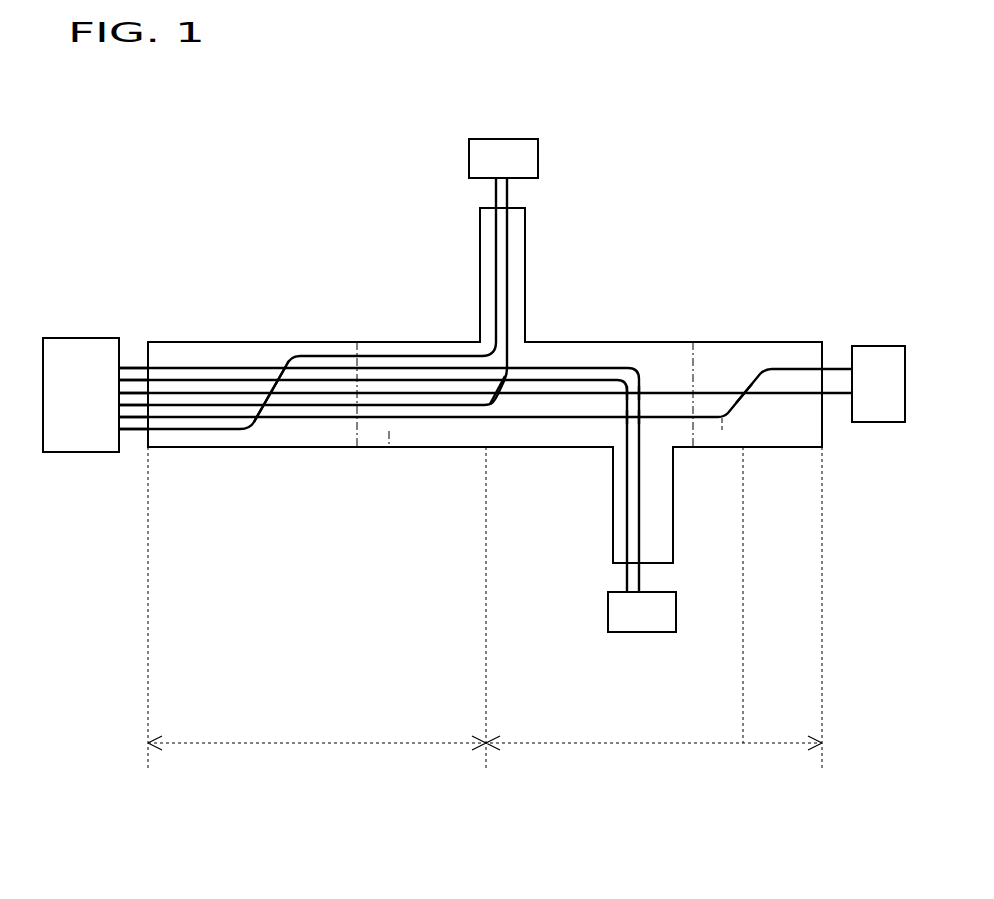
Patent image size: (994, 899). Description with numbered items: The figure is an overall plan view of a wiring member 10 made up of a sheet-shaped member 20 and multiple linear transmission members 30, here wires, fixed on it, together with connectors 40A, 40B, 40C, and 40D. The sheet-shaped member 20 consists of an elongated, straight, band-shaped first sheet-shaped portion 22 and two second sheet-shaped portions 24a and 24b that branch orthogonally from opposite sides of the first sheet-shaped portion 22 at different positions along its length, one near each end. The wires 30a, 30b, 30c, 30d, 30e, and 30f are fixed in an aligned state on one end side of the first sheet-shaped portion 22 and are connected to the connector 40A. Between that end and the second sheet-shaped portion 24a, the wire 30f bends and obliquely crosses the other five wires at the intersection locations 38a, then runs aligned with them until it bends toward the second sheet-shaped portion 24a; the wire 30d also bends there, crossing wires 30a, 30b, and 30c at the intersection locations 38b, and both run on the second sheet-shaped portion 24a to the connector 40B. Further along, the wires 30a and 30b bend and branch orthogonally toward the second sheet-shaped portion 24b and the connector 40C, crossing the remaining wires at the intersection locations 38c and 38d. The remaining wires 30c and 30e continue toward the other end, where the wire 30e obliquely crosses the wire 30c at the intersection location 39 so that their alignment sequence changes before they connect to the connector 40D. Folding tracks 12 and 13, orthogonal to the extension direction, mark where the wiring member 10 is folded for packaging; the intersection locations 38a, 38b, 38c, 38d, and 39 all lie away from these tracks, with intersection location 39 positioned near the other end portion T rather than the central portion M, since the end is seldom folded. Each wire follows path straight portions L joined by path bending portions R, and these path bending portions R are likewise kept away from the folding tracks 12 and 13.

The wiring member 10 is at (383, 202).
The folding track 12 is at (357, 342).
The folding track 13 is at (707, 342).
The sheet-shaped member 20 is at (389, 329).
The first sheet-shaped portion 22 is at (438, 342).
The second sheet-shaped portion 24a is at (479, 255).
The second sheet-shaped portion 24b is at (674, 508).
The linear transmission member 30 is at (135, 353).
The wire 30a is at (165, 368).
The wire 30b is at (210, 380).
The wire 30c is at (255, 393).
The wire 30d is at (511, 240).
The wire 30e is at (793, 370).
The wire 30f is at (494, 222).
The intersection location 38a is at (290, 368).
The intersection location 38b is at (504, 380).
The intersection location 38c is at (627, 416).
The intersection location 38d is at (639, 392).
The intersection location 39 is at (744, 393).
The connector 40A is at (68, 338).
The connector 40B is at (543, 152).
The connector 40C is at (676, 605).
The connector 40D is at (878, 422).
The path straight portion L is at (495, 283).
The path bending portion R is at (510, 357).
The central portion M is at (482, 448).
The other end portion T is at (823, 437).